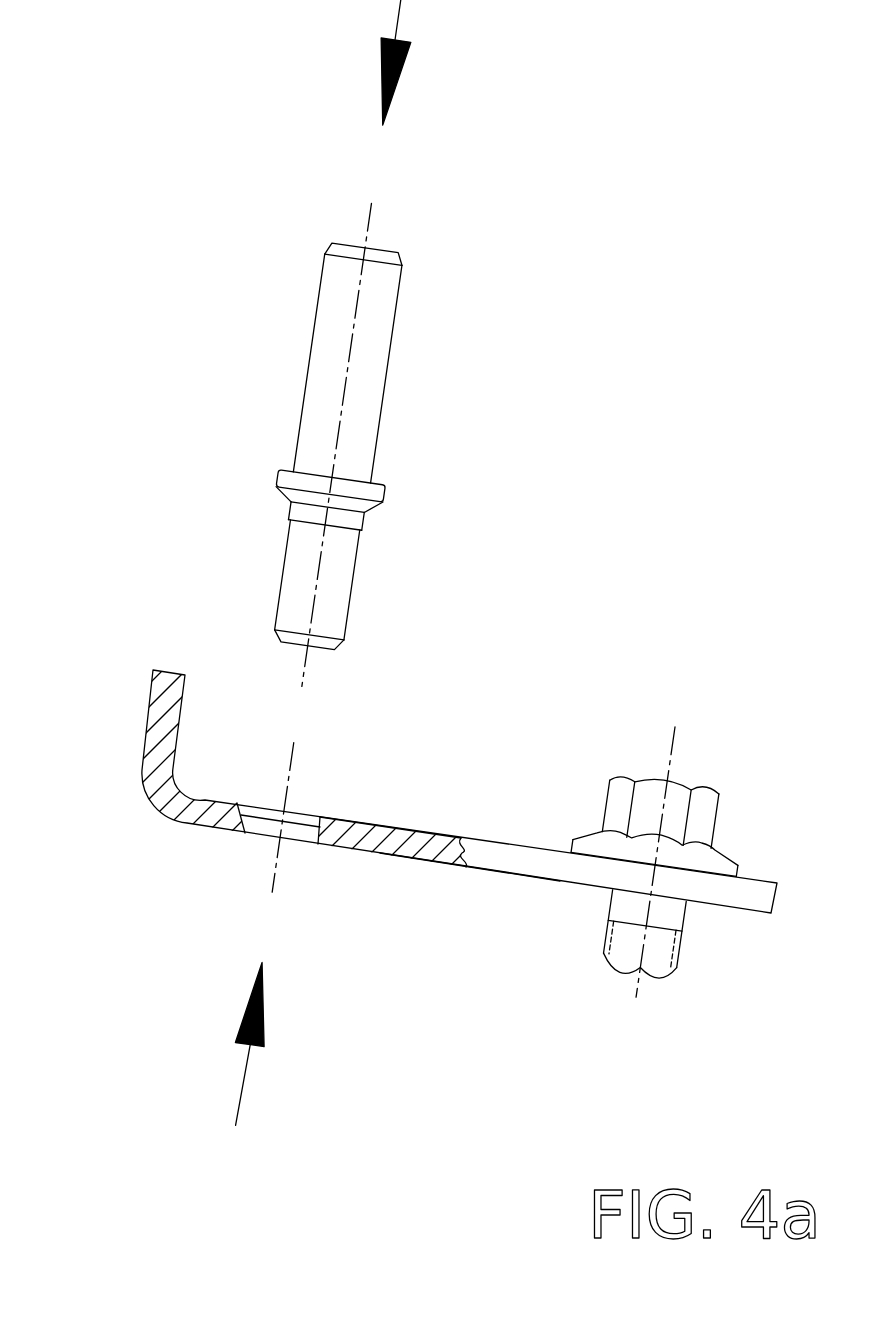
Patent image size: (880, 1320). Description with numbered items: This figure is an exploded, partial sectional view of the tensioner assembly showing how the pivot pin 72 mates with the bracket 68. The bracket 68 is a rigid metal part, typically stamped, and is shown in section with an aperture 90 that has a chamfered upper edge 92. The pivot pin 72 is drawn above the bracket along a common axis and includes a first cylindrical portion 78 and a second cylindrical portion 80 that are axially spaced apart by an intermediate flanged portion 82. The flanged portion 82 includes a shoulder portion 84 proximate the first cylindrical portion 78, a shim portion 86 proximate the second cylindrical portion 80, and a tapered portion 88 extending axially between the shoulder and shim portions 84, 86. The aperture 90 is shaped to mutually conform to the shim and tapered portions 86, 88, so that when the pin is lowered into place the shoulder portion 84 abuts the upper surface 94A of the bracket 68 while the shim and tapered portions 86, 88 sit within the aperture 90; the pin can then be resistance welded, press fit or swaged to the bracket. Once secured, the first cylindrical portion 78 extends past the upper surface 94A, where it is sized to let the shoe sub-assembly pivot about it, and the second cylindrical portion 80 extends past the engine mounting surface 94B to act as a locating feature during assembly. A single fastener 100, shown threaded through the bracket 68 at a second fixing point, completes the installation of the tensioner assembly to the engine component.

The bracket 68 is at (388, 812).
The pivot pin 72 is at (328, 565).
The first cylindrical portion 78 is at (385, 300).
The second cylindrical portion 80 is at (330, 603).
The flanged portion 82 is at (400, 494).
The shoulder portion 84 is at (292, 470).
The shim portion 86 is at (357, 528).
The tapered portion 88 is at (287, 497).
The aperture 90 is at (250, 834).
The chamfered upper edge 92 is at (312, 805).
The upper surface 94A is at (387, 823).
The engine mounting surface 94B is at (498, 875).
The fastener 100 is at (693, 783).